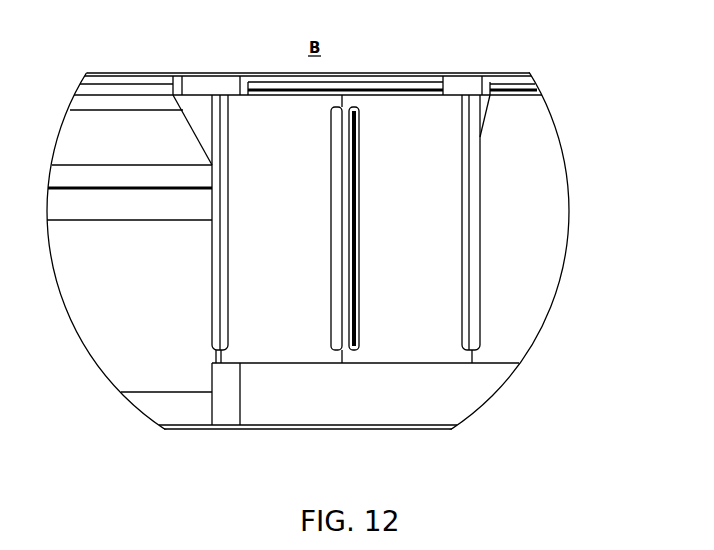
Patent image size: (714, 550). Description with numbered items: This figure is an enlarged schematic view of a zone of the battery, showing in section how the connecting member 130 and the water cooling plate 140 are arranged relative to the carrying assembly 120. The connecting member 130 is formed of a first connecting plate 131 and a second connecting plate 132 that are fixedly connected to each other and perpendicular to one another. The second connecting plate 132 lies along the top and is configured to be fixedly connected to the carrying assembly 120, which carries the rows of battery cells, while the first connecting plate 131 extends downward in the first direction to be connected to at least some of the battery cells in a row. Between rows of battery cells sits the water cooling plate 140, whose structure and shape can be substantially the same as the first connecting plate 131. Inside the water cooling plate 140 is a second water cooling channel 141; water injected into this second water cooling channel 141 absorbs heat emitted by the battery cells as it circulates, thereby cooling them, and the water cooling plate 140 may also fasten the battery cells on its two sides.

The carrying assembly 120 is at (382, 82).
The connecting member 130 is at (308, 184).
The first connecting plate 131 is at (222, 213).
The second connecting plate 132 is at (204, 83).
The water cooling plate 140 is at (440, 272).
The second water cooling channel 141 is at (355, 257).